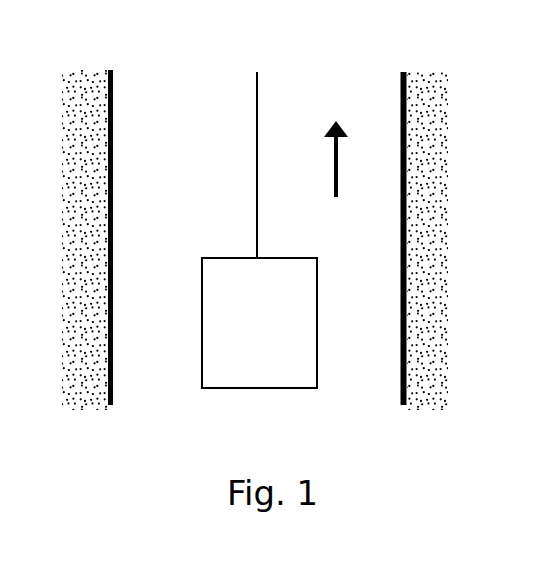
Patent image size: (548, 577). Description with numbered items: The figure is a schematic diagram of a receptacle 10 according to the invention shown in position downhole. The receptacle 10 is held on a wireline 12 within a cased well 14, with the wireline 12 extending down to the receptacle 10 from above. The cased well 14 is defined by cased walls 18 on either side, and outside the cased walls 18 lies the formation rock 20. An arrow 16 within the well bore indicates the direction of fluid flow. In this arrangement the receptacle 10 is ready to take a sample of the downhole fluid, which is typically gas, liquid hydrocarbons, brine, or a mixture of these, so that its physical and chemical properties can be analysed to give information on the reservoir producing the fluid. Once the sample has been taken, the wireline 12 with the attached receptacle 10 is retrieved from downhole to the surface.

The receptacle 10 is at (266, 367).
The wireline 12 is at (256, 102).
The cased well 14 is at (178, 214).
The arrow 16 is at (337, 162).
The cased walls 18 is at (108, 220).
The formation rock 20 is at (104, 353).